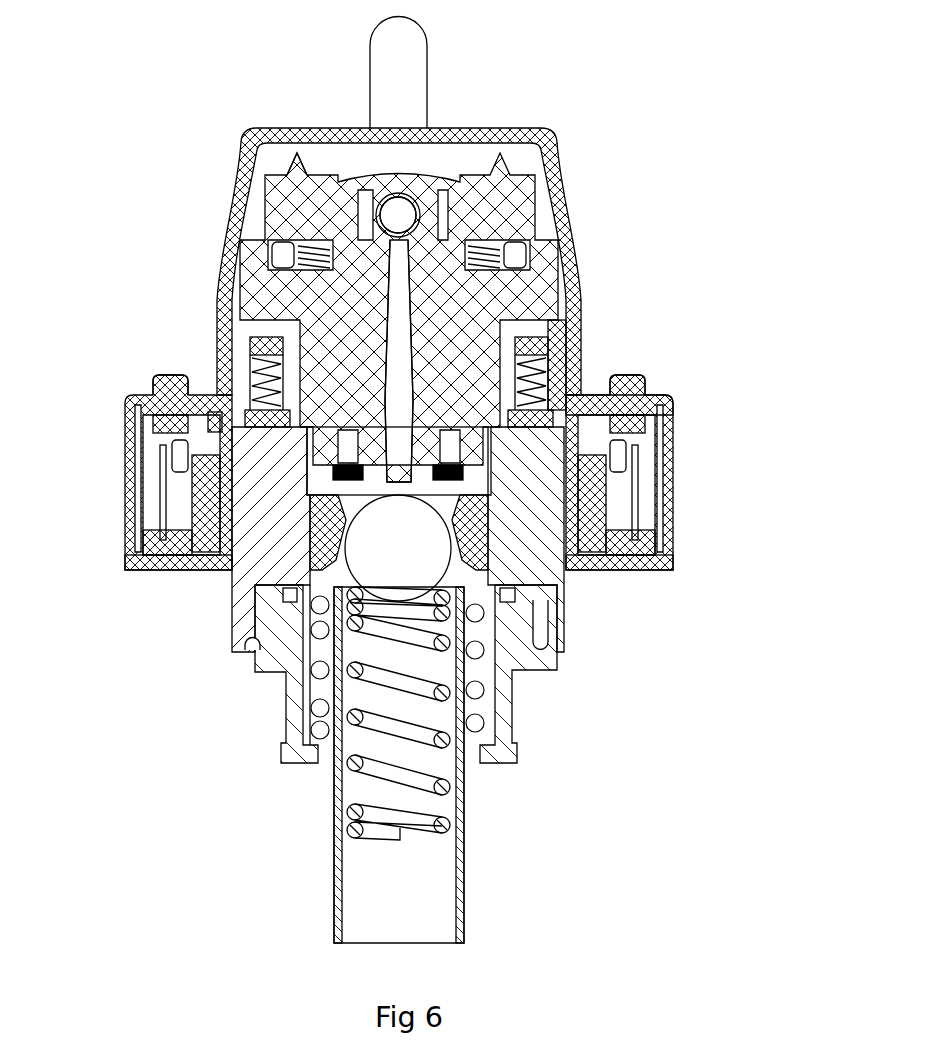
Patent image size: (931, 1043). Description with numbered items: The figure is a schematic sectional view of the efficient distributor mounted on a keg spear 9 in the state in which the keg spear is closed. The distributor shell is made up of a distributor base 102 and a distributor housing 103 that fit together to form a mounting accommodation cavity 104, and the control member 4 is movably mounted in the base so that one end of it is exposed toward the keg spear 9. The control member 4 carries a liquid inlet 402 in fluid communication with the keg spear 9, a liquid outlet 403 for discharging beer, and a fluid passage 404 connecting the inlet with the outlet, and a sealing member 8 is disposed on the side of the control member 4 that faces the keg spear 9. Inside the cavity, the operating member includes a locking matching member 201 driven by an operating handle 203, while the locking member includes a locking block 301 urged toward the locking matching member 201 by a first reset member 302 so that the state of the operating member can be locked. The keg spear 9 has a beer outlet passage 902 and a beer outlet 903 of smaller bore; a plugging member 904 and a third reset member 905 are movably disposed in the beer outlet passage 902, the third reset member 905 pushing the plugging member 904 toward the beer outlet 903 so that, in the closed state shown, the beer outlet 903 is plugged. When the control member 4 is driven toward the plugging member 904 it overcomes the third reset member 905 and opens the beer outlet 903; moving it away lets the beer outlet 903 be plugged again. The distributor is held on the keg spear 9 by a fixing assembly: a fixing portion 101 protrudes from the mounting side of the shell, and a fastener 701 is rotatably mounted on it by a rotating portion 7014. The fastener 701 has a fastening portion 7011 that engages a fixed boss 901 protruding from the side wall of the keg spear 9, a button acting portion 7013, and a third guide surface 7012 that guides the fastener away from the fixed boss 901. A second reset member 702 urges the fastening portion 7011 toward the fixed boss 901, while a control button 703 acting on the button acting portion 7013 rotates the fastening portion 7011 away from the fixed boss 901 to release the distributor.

The mounting accommodation cavity 104 is at (418, 160).
The distributor housing 103 is at (547, 130).
The liquid outlet 403 is at (390, 190).
The fluid passage 404 is at (252, 174).
The control member 4 is at (245, 218).
The liquid inlet 402 is at (268, 340).
The fixed boss 901 is at (212, 410).
The control button 703 is at (153, 375).
The second reset member 702 is at (175, 453).
The fastening portion 7011 is at (190, 473).
The button acting portion 7013 is at (192, 550).
The rotating portion 7014 is at (168, 568).
The keg spear 9 is at (230, 622).
The beer outlet 903 is at (320, 583).
The beer outlet passage 902 is at (372, 865).
The locking matching member 201 is at (535, 205).
The operating handle 203 is at (565, 225).
The locking block 301 is at (548, 330).
The first reset member 302 is at (557, 355).
The distributor base 102 is at (585, 395).
The third guide surface 7012 is at (587, 470).
The fastener 701 is at (608, 503).
The fixing portion 101 is at (587, 562).
The sealing member 8 is at (408, 557).
The plugging member 904 is at (512, 672).
The third reset member 905 is at (415, 683).